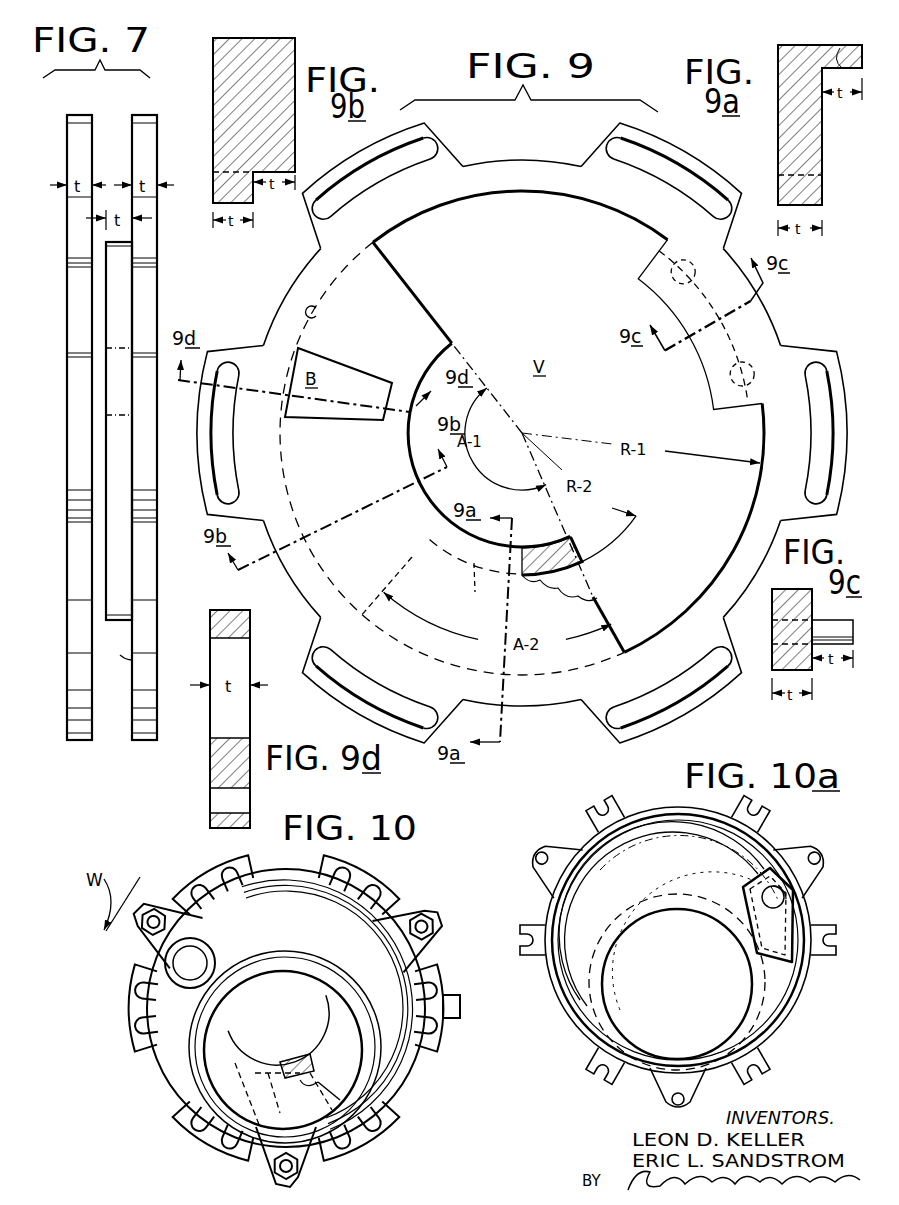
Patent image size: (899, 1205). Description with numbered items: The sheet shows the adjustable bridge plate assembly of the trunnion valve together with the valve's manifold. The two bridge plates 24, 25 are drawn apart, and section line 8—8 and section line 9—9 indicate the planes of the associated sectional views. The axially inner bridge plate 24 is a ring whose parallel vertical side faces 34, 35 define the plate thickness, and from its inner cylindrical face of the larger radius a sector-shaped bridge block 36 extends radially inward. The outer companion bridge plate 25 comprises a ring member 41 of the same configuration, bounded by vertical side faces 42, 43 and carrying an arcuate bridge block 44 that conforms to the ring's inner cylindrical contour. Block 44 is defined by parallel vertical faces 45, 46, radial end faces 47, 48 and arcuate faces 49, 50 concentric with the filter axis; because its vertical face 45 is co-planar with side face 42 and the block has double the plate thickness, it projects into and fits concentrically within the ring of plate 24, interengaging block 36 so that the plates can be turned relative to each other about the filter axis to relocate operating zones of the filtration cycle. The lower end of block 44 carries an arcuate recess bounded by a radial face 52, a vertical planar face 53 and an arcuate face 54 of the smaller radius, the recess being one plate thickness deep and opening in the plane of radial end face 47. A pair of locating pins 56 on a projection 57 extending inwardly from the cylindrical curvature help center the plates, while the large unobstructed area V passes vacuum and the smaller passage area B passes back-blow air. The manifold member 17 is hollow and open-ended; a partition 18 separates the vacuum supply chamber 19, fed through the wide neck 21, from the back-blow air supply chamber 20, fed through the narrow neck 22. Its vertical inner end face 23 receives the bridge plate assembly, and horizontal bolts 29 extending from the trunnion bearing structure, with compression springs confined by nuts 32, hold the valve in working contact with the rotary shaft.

In FIG. 7, the section line 8— 8 is at (104, 93).
In FIG. 7, the section line 9— 9 is at (176, 93).
In FIG. 10, the manifold member 17 is at (300, 941).
In FIG. 10A, the manifold member 17 is at (664, 804).
In FIG. 10A, the partition 18 is at (740, 887).
In FIG. 10A, the vacuum supply chamber 19 is at (670, 896).
In FIG. 10A, the back-blow air supply chamber 20 is at (789, 950).
In FIG. 10, the wide neck 21 is at (324, 990).
In FIG. 10A, the wide neck 21 is at (603, 982).
In FIG. 10, the narrow neck 22 is at (208, 948).
In FIG. 10A, the narrow neck 22 is at (785, 898).
In FIG. 10A, the vertical inner end face 23 is at (583, 838).
In FIG. 7, the bridge plate 24 is at (63, 731).
In FIG. 7, the bridge plate 25 is at (131, 746).
In FIG. 9, the bridge plate 25 is at (297, 259).
In FIG. 10, the horizontal bolts 29 is at (428, 932).
In FIG. 10, the nuts 32 is at (272, 1160).
In FIG. 7, the side face 34 is at (67, 625).
In FIG. 7, the side face 35 is at (98, 625).
In FIG. 10, the bridge block 36 is at (320, 1085).
In FIG. 9, the ring member 41 is at (537, 188).
In FIG. 7, the side face 42 is at (157, 660).
In FIG. 7, the side face 43 is at (113, 660).
In FIG. 7, the bridge block 44 is at (123, 475).
In FIG. 9, the bridge block 44 is at (366, 478).
In FIG. 10, the bridge block 44 is at (285, 1060).
In FIG. 9B, the vertical face 45 is at (213, 78).
In FIG. 9B, the vertical face 46 is at (297, 162).
In FIG. 9, the radial end face 47 is at (597, 603).
In FIG. 9, the radial end face 48 is at (403, 279).
In FIG. 9, the arcuate face 49 is at (432, 493).
In FIG. 9, the arcuate face 50 is at (319, 316).
In FIG. 9, the radial face 52 is at (398, 587).
In FIG. 9, the vertical planar face 53 is at (573, 593).
In FIG. 9A, the vertical planar face 53 is at (822, 139).
In FIG. 9, the arcuate face 54 is at (472, 588).
In FIG. 9A, the arcuate face 54 is at (846, 58).
In FIG. 9, the locating pins 56 is at (677, 263).
In FIG. 9C, the locating pins 56 is at (828, 627).
In FIG. 9, the projection 57 is at (668, 297).